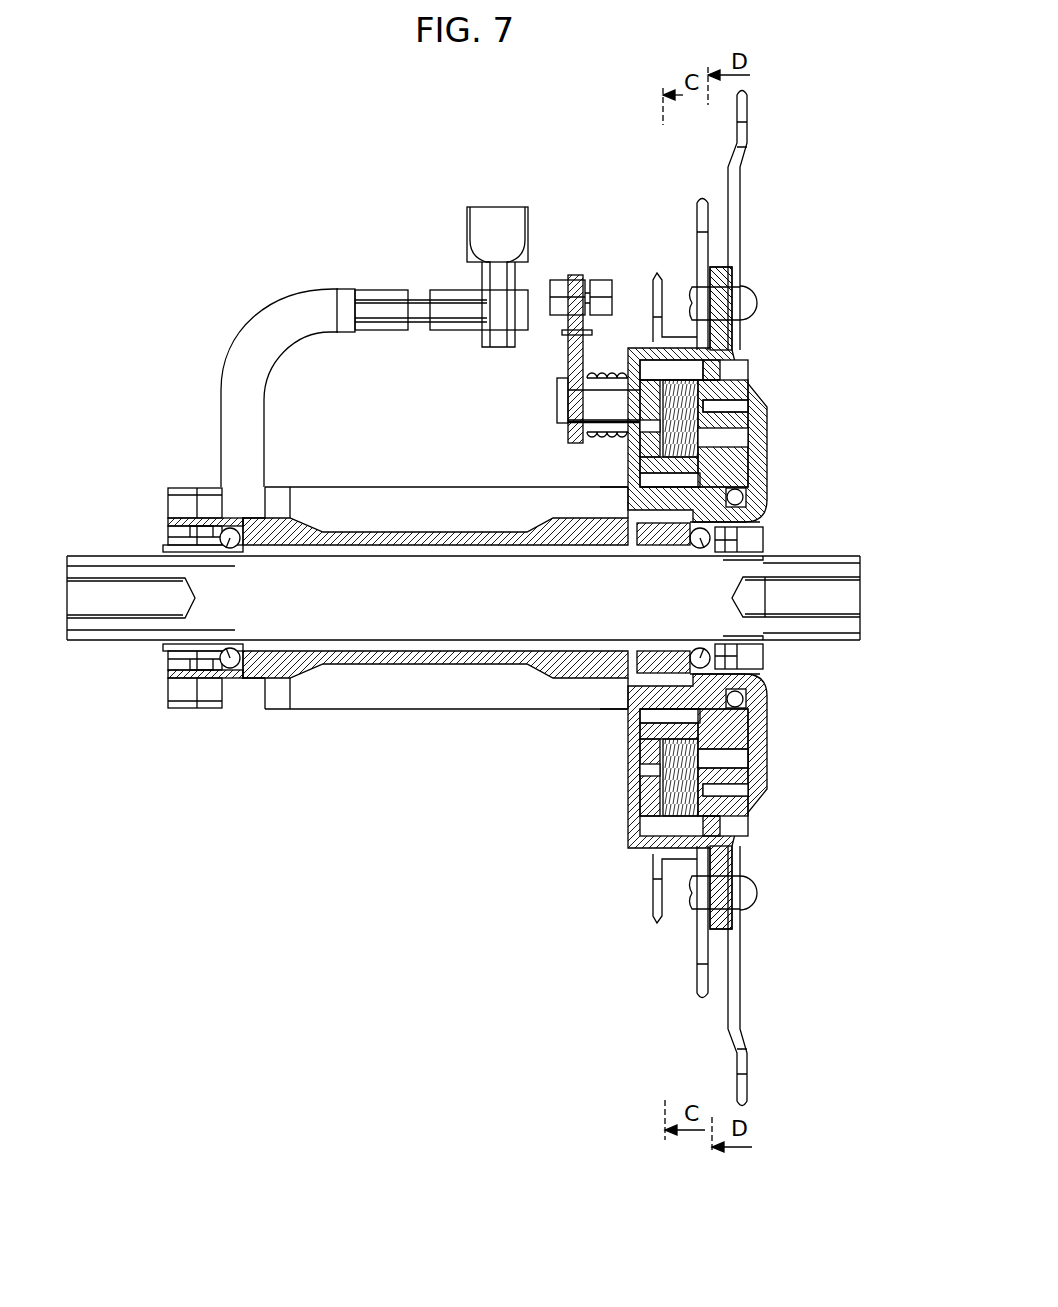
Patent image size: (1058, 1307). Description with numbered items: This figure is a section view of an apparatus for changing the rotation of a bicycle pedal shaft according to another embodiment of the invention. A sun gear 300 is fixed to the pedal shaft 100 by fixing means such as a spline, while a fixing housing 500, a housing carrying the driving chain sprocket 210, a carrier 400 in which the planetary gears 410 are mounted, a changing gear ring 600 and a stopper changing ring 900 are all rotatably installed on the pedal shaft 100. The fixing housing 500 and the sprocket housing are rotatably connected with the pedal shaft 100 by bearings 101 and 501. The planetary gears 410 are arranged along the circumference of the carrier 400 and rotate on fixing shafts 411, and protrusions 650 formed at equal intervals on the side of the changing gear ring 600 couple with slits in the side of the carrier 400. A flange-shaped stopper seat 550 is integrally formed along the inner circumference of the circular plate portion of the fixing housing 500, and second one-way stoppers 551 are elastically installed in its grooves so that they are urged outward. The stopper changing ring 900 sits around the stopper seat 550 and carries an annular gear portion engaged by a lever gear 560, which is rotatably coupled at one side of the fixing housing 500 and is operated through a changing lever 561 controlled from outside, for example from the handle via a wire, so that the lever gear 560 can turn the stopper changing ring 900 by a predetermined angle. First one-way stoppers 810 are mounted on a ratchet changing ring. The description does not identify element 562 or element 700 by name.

The pedal shaft 100 is at (203, 620).
The bearings 101 is at (750, 508).
The driving chain sprocket 210 is at (748, 165).
The sun gear 300 is at (743, 492).
The carrier 400 is at (752, 350).
The planetary gears 410 is at (735, 405).
The fixing shafts 411 is at (735, 437).
The fixing housing 500 is at (370, 530).
The bearings 501 is at (230, 548).
The stopper seat 550 is at (728, 707).
The second one-way stoppers 551 is at (665, 487).
The lever gear 560 is at (610, 435).
The changing lever 561 is at (575, 362).
The bolt 562 is at (600, 418).
The changing gear ring 600 is at (660, 748).
The protrusions 650 is at (690, 772).
The spool 700 is at (700, 392).
The first one-way stoppers 810 is at (668, 372).
The stopper changing ring 900 is at (605, 490).